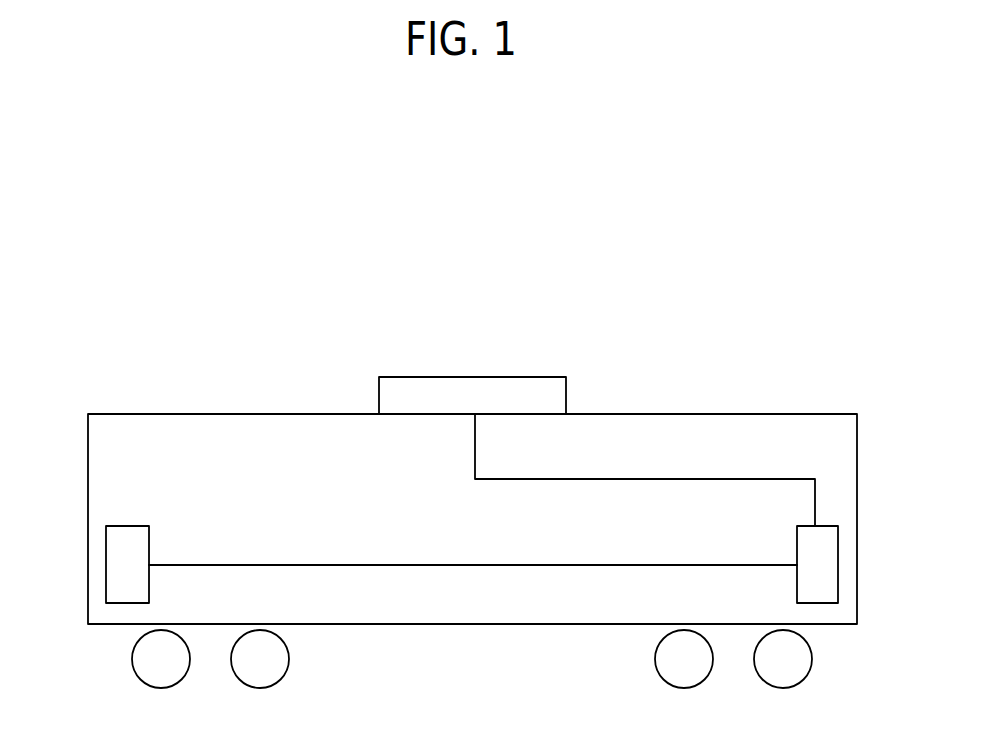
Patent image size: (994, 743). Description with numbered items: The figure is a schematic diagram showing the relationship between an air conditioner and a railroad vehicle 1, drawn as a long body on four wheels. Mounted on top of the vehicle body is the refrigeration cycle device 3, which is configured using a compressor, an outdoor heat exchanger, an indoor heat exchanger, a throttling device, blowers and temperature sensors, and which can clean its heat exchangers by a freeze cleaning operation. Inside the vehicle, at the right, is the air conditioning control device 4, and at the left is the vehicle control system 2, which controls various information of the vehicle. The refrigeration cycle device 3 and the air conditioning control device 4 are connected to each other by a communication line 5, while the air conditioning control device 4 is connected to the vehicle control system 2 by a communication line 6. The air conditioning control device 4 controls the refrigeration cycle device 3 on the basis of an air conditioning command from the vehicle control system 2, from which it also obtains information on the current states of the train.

The railroad vehicle 1 is at (811, 414).
The vehicle control system 2 is at (122, 526).
The refrigeration cycle device 3 is at (471, 377).
The air conditioning control device 4 is at (838, 563).
The communication line 5 is at (647, 479).
The communication line 6 is at (328, 565).